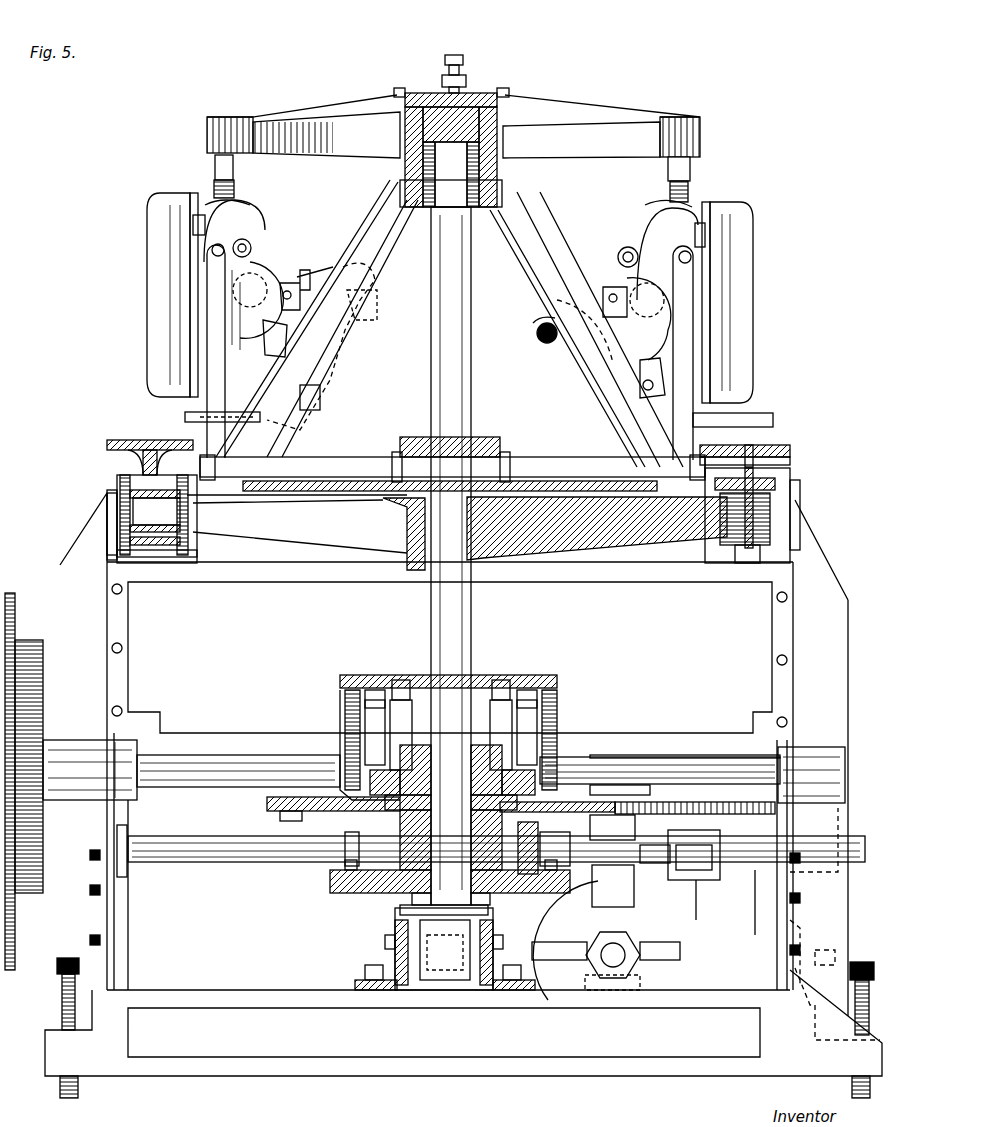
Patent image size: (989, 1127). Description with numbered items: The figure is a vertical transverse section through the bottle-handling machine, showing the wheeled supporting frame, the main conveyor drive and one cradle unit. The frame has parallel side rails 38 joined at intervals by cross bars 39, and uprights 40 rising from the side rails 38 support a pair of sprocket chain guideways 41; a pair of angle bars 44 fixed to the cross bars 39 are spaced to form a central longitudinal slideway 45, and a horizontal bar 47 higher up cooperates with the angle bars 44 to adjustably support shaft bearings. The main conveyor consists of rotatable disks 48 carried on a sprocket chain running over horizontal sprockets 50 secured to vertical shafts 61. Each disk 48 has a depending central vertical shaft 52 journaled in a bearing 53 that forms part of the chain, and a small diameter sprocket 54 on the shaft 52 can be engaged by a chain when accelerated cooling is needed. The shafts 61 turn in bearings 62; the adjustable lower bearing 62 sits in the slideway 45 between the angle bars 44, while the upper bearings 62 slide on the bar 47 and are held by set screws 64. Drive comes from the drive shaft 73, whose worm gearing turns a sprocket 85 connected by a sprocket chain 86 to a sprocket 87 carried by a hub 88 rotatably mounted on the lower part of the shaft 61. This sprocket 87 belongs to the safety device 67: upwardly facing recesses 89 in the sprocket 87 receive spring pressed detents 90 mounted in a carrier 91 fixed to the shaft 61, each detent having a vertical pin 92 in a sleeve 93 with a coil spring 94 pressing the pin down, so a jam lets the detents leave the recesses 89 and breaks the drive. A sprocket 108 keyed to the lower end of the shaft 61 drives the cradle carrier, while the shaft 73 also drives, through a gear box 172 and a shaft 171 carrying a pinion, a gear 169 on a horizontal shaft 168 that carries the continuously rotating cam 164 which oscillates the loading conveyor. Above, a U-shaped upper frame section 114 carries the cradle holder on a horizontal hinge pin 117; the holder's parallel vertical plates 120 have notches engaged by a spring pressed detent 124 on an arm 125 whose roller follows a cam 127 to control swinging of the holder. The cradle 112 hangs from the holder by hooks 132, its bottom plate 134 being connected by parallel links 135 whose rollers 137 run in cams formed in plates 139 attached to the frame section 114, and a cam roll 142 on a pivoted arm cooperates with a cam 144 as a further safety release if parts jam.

The side rails 38 is at (120, 940).
The cross bars 39 is at (285, 1068).
The uprights 40 is at (62, 548).
The sprocket chain guideways 41 is at (158, 563).
The angle bars 44 is at (398, 990).
The slideway 45 is at (445, 990).
The horizontal bar 47 is at (468, 100).
The rotatable disks 48 is at (120, 440).
The horizontal sprockets 50 is at (700, 532).
The central vertical shaft 52 is at (752, 450).
The bearing 53 is at (745, 563).
The small diameter sprocket 54 is at (790, 464).
The vertical shafts 61 is at (455, 610).
The bearings 62 is at (492, 172).
The set screws 64 is at (462, 52).
The safety device 67 is at (445, 726).
The drive shaft 73 is at (615, 950).
The sprocket 85 is at (745, 800).
The sprocket chain 86 is at (267, 802).
The sprocket 87 is at (290, 821).
The hub 88 is at (390, 810).
The recesses 89 is at (340, 812).
The spring pressed detents 90 is at (340, 790).
The carrier 91 is at (535, 770).
The vertical pin 92 is at (345, 675).
The sleeve 93 is at (345, 700).
The coil spring 94 is at (345, 735).
The sprocket 108 is at (345, 893).
The cradle 112 is at (160, 252).
The upper frame section 114 is at (230, 360).
The horizontal hinge pin 117 is at (235, 228).
The parallel vertical plates 120 is at (246, 232).
The spring pressed detent 124 is at (257, 190).
The arm 125 is at (233, 166).
The cam 127 is at (548, 130).
The hooks 132 is at (200, 215).
The bottom plate 134 is at (180, 420).
The parallel links 135 is at (272, 340).
The rollers 137 is at (250, 243).
The plates 139 is at (283, 270).
The cam roll 142 is at (372, 272).
The cam 144 is at (377, 308).
The cam 164 is at (15, 600).
The horizontal shaft 168 is at (220, 756).
The gear 169 is at (35, 642).
The shaft 171 is at (212, 862).
The gear box 172 is at (636, 875).